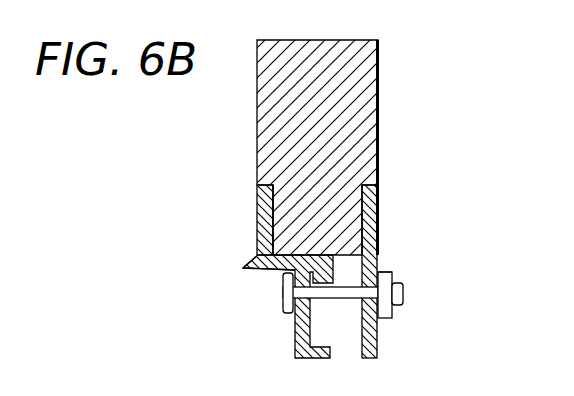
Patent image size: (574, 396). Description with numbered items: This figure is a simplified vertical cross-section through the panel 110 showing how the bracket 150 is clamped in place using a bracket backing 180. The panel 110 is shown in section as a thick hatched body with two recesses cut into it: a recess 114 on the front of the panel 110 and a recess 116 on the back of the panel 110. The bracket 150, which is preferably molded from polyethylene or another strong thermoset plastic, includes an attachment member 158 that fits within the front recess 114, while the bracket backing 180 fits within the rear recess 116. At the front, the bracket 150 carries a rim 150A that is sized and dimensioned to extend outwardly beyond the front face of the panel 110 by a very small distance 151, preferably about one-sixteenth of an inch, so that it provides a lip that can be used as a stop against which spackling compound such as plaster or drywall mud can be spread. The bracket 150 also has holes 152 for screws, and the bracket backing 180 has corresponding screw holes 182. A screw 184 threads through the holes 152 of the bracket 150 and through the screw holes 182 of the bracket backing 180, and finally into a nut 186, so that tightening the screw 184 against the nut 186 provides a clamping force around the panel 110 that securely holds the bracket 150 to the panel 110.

The panel 110 is at (378, 88).
The recess 114 is at (281, 200).
The recess 116 is at (352, 201).
The attachment member 158 is at (257, 208).
The bracket backing 180 is at (381, 226).
The bracket 150 is at (293, 338).
The rim 150A is at (262, 273).
The distance 151 is at (247, 262).
The holes 152 is at (285, 298).
The screw holes 182 is at (399, 271).
The screw 184 is at (404, 293).
The nut 186 is at (393, 312).